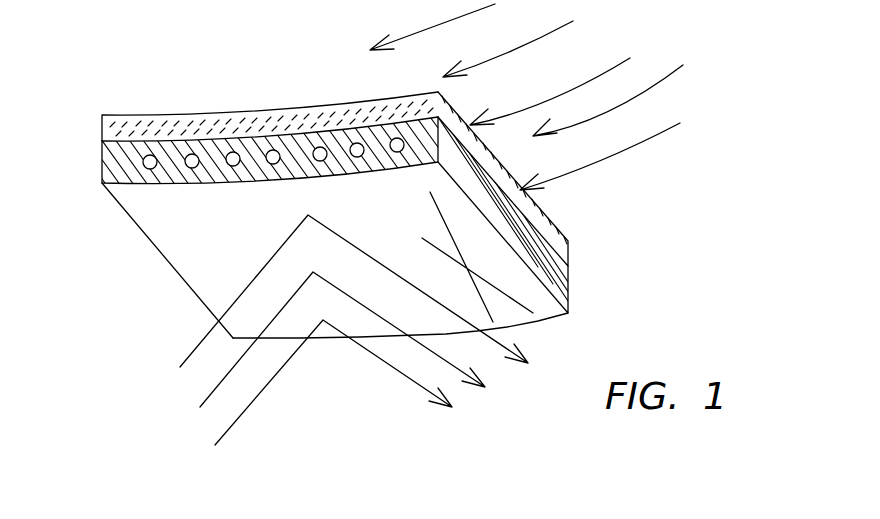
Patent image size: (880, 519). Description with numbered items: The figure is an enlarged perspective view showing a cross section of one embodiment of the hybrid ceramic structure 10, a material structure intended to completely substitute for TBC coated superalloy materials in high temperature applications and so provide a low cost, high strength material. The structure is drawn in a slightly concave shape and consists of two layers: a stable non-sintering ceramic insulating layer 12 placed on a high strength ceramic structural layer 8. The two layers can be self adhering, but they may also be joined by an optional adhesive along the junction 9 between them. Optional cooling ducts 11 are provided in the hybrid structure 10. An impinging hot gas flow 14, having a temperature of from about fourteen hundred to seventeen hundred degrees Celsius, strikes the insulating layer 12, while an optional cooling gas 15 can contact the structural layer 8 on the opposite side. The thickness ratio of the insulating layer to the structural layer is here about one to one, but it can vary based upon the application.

The ceramic structural layer 8 is at (135, 168).
The junction 9 is at (336, 118).
The hybrid ceramic structure 10 is at (324, 211).
The cooling ducts 11 is at (254, 158).
The ceramic insulating layer 12 is at (125, 120).
The hot gas flow 14 is at (525, 43).
The cooling gas 15 is at (228, 428).